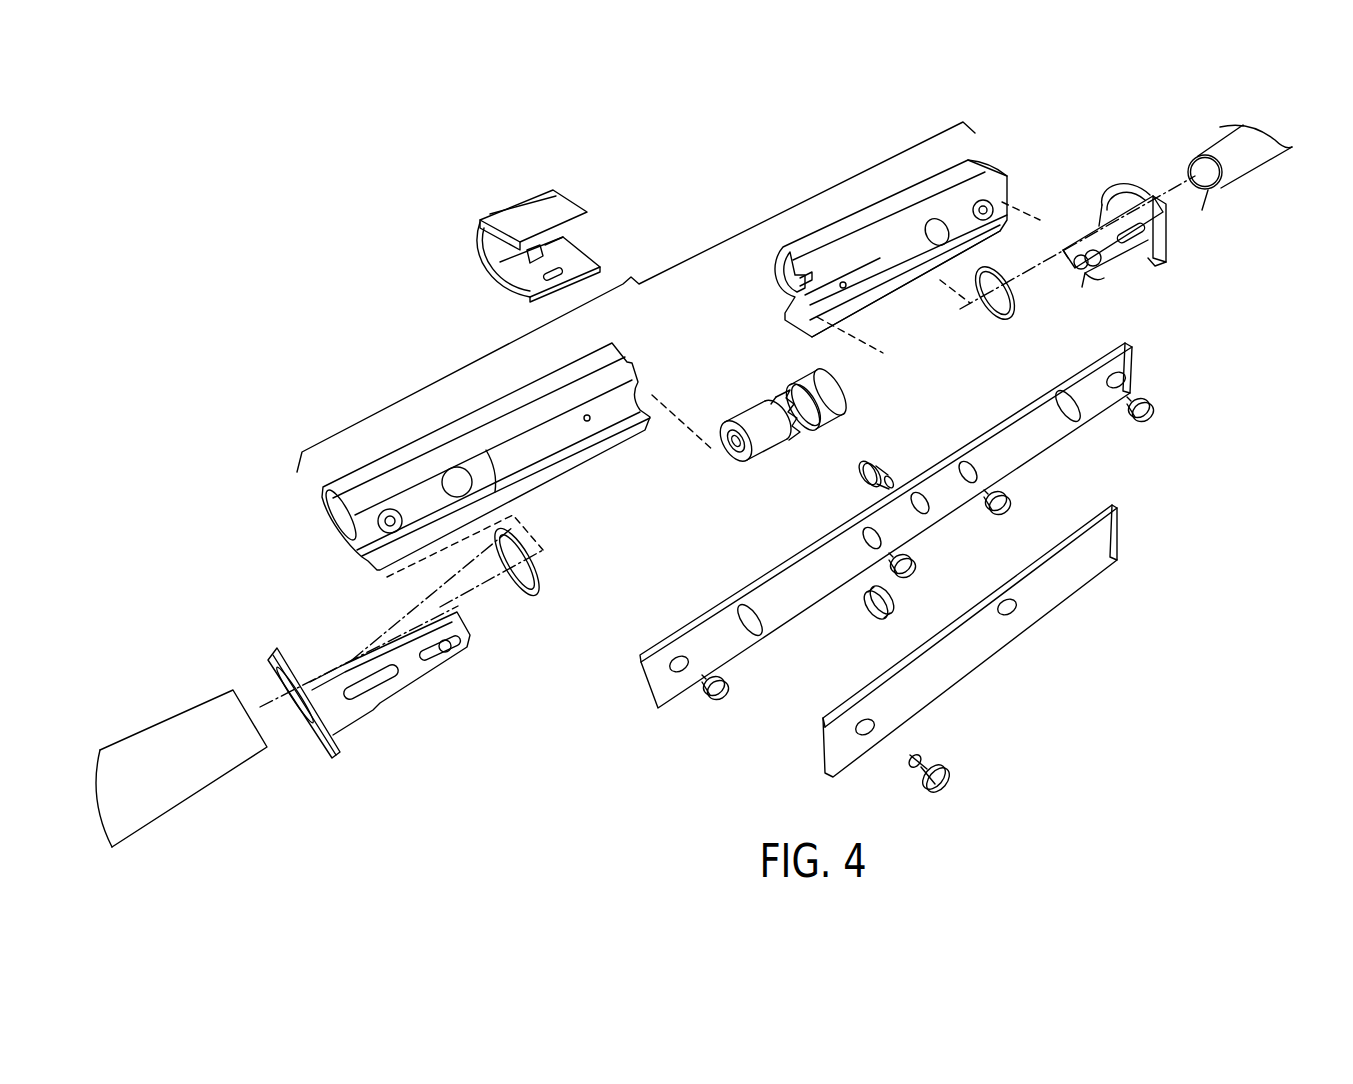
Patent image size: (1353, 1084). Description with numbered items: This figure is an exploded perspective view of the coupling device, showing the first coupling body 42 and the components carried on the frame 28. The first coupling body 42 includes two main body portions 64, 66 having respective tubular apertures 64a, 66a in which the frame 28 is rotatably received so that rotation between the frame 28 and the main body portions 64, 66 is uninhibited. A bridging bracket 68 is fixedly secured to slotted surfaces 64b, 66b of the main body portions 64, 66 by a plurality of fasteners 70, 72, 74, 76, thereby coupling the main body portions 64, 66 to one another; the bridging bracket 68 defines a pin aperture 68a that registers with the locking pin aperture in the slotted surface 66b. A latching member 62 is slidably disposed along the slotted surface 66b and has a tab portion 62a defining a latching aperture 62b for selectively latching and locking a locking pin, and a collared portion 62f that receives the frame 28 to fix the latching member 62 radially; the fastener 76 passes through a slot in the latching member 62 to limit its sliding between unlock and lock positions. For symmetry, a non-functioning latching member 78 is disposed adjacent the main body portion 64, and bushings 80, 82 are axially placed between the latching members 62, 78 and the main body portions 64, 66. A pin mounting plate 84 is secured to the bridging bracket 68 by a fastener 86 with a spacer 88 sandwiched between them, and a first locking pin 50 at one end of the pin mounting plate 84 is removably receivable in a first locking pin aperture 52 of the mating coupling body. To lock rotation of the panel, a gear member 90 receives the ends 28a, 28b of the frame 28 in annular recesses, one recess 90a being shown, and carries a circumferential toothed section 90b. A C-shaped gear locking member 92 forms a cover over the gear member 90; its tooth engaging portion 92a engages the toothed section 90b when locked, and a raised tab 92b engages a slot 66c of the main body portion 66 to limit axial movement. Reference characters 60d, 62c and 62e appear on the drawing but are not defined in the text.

The frame 28 is at (1239, 183).
The end of frame 28a is at (168, 743).
The end of frame 28b is at (1203, 198).
The first coupling body 42 is at (636, 297).
The first locking pin 50 is at (915, 770).
The first locking pin aperture 52 is at (940, 228).
The protrusion 60d is at (1085, 251).
The latching member 62 is at (1118, 255).
The tab portion 62a is at (1112, 260).
The latching aperture 62b is at (1053, 272).
The bracket lower portion 62c is at (1080, 268).
The bracket end plate 62e is at (1160, 260).
The collared portion 62f is at (1143, 190).
The main body portion 64 is at (458, 456).
The tubular aperture 64a is at (337, 517).
The slotted surface 64b is at (533, 455).
The main body portion 66 is at (885, 242).
The tubular aperture 66a is at (783, 292).
The slotted surface 66b is at (875, 272).
The slot 66c is at (817, 270).
The bridging bracket 68 is at (886, 525).
The pin aperture 68a is at (1065, 426).
The fastener 70 is at (710, 700).
The fastener 72 is at (913, 571).
The fastener 74 is at (1005, 511).
The fastener 76 is at (1150, 416).
The non-functioning latching member 78 is at (400, 728).
The bushing 80 is at (983, 310).
The bushing 82 is at (527, 593).
The pin mounting plate 84 is at (950, 665).
The fastener 86 is at (862, 472).
The spacer 88 is at (883, 612).
The gear member 90 is at (771, 432).
The annular recess 90a is at (730, 440).
The toothed section 90b is at (778, 400).
The gear locking member 92 is at (538, 238).
The tooth engaging portion 92a is at (540, 249).
The raised tab 92b is at (541, 275).